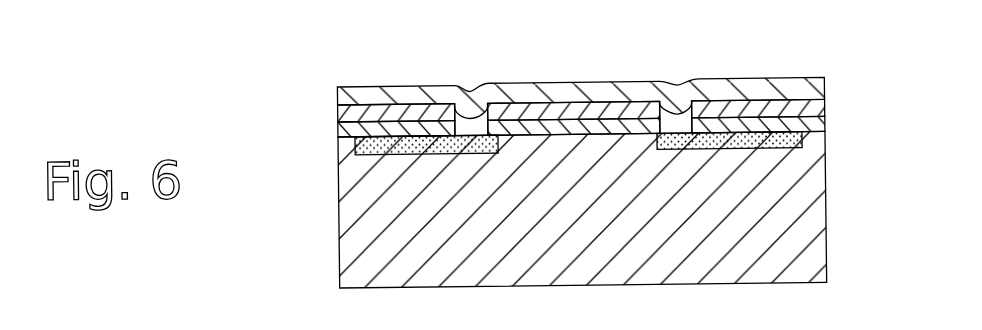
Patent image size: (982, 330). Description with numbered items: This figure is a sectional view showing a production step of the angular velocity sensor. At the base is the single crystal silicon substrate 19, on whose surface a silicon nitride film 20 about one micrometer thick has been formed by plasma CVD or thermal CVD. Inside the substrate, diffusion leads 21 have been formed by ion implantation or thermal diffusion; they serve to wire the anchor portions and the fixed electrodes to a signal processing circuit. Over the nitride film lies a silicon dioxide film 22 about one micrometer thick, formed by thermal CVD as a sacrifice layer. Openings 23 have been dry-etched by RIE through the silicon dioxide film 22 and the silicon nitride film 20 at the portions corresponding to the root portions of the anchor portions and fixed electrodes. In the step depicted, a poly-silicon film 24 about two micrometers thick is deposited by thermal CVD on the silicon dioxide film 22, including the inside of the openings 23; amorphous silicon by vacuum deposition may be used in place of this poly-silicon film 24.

The single crystal silicon substrate 19 is at (826, 232).
The silicon nitride film 20 is at (827, 128).
The diffusion leads 21 is at (363, 156).
The silicon dioxide film 22 is at (827, 116).
The openings 23 is at (470, 110).
The poly-silicon film 24 is at (798, 87).